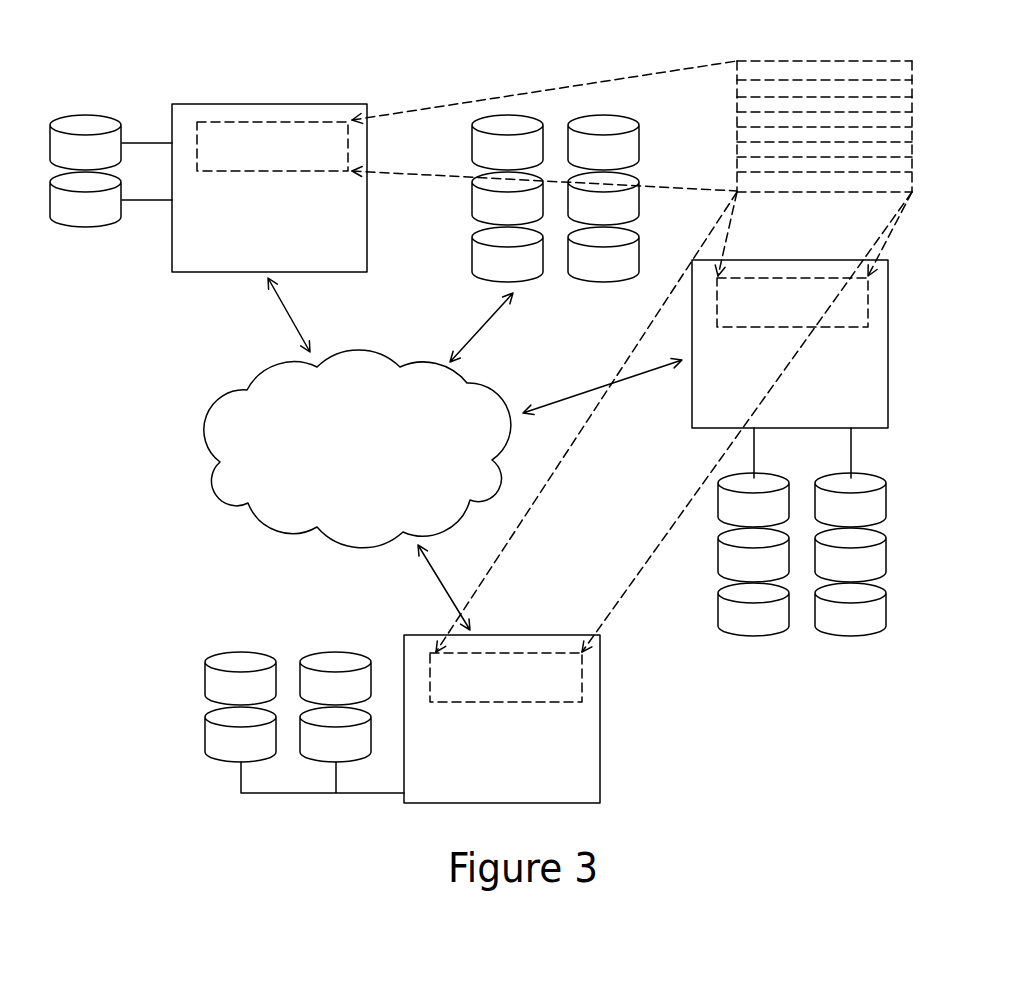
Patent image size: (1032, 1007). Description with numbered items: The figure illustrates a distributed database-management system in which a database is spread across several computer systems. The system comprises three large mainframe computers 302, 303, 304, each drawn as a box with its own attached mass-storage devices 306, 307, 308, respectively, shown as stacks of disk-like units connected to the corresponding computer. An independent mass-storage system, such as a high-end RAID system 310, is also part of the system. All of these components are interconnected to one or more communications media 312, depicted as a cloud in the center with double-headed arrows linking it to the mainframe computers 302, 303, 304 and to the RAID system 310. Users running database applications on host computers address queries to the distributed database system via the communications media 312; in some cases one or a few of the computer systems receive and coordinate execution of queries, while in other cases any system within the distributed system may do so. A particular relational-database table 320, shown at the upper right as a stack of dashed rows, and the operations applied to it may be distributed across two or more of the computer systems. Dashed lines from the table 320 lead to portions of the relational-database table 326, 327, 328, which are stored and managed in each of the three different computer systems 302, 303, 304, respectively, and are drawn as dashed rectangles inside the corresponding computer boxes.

The mainframe computer 302 is at (211, 99).
The mainframe computer 303 is at (895, 335).
The mainframe computer 304 is at (610, 738).
The mass-storage devices 306 is at (76, 230).
The mass-storage devices 307 is at (905, 530).
The mass-storage devices 308 is at (275, 638).
The high-end RAID system 310 is at (541, 112).
The communications media 312 is at (218, 442).
The relational-database table 320 is at (925, 120).
The portion of the relational-database table 326 is at (240, 172).
The portion of the relational-database table 327 is at (762, 328).
The portion of the relational-database table 328 is at (488, 703).